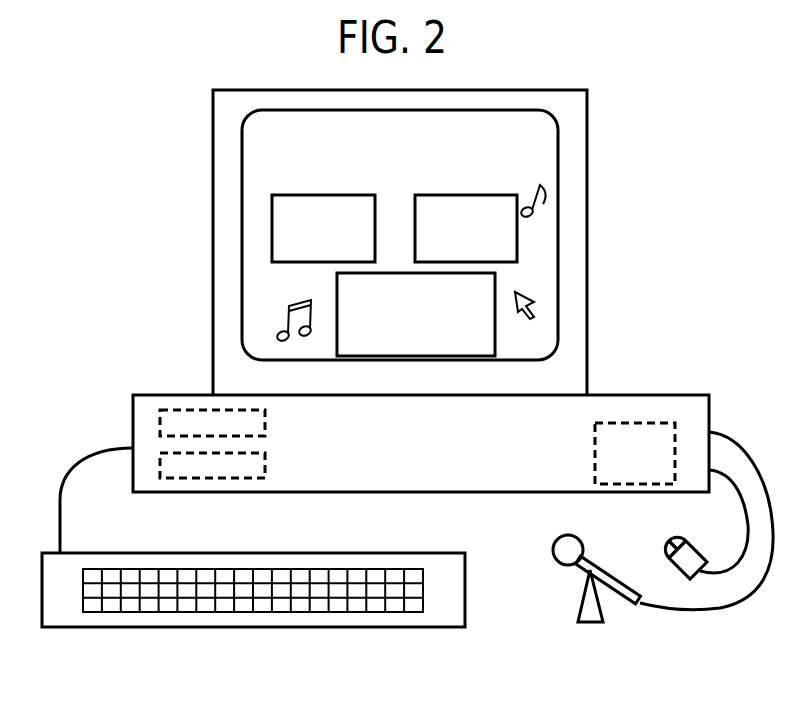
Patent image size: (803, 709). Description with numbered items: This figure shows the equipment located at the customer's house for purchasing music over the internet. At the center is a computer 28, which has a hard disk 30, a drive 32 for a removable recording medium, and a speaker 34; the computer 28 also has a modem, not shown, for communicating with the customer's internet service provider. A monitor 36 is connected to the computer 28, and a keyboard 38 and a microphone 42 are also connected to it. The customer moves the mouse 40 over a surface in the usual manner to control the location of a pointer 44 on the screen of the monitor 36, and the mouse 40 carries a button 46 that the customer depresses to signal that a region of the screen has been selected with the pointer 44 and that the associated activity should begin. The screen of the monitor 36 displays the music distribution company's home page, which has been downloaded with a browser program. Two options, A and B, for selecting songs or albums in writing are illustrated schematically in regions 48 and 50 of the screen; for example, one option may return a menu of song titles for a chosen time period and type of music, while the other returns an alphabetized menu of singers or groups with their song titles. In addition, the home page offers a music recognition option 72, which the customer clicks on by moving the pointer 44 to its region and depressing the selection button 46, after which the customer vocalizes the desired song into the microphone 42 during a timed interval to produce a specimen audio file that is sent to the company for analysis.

The computer 28 is at (313, 492).
The hard disk 30 is at (265, 430).
The drive for a removable recording medium 32 is at (265, 472).
The speaker 34 is at (595, 437).
The monitor 36 is at (587, 241).
The keyboard 38 is at (130, 627).
The mouse 40 is at (700, 560).
The microphone 42 is at (556, 552).
The pointer 44 is at (535, 305).
The button 46 is at (663, 545).
The region of the screen for option A 48 is at (325, 195).
The region of the screen for option B 50 is at (445, 195).
The music recognition option 72 is at (495, 325).